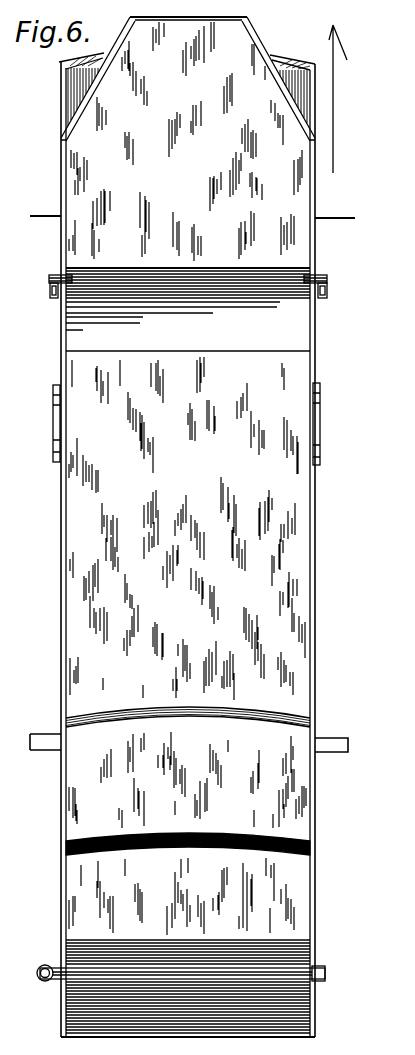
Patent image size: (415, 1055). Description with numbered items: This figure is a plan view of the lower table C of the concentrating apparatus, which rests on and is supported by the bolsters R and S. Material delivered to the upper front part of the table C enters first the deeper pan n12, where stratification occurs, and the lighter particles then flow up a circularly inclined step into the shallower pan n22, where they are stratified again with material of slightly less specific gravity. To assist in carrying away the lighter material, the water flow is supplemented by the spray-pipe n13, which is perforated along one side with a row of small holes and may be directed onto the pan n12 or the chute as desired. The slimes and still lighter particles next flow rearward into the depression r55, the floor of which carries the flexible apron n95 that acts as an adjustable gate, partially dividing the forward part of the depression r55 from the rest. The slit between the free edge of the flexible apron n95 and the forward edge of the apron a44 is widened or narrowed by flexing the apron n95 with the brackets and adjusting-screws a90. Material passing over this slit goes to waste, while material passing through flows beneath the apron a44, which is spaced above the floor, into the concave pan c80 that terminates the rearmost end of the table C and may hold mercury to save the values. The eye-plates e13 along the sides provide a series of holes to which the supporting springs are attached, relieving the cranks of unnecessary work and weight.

The lower table C is at (188, 549).
The apron a44 is at (188, 109).
The concave pan c80 is at (290, 64).
The bolster S is at (191, 237).
The brackets and adjusting-screws a90 is at (336, 302).
The flexible apron n95 is at (188, 305).
The depression r55 is at (295, 346).
The eye-plates e13 is at (186, 424).
The pan n22 is at (188, 730).
The bolster R is at (187, 759).
The pan n12 is at (188, 866).
The spray-pipe n13 is at (338, 973).